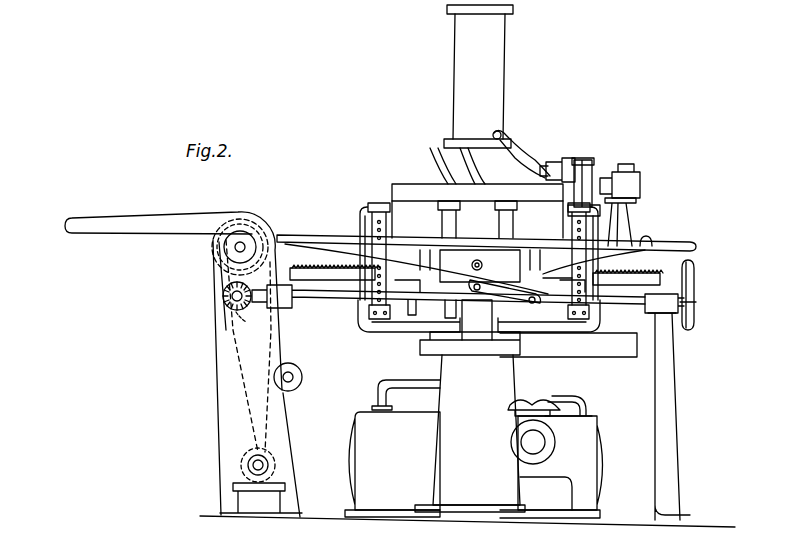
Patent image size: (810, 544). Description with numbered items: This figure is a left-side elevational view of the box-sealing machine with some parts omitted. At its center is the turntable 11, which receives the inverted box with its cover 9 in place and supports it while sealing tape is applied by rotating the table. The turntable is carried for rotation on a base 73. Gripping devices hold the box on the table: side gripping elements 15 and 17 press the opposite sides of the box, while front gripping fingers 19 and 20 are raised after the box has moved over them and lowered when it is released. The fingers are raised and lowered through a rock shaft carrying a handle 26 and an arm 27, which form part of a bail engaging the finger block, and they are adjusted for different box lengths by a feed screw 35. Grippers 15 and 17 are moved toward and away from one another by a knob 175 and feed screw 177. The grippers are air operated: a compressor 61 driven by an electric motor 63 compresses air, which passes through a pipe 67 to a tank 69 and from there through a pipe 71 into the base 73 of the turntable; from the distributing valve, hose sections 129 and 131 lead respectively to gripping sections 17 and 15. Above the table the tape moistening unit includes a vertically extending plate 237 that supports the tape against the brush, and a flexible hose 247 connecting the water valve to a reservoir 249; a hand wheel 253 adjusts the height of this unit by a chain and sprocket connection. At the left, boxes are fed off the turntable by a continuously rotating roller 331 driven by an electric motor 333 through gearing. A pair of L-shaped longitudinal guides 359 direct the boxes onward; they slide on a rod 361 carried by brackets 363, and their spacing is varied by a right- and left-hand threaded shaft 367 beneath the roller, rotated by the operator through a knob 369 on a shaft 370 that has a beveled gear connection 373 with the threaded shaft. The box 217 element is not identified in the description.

The cover 9 is at (477, 193).
The turntable 11 is at (347, 229).
The side gripping element 15 is at (588, 205).
The side gripping element 17 is at (378, 205).
The front gripping finger 19 is at (448, 201).
The front gripping finger 20 is at (505, 201).
The handle 26 is at (549, 302).
The arm 27 is at (492, 283).
The feed screw 35 is at (471, 264).
The compressor 61 is at (555, 398).
The electric motor 63 is at (540, 442).
The pipe 67 is at (580, 400).
The tank 69 is at (392, 464).
The pipe 71 is at (378, 398).
The base 73 is at (470, 433).
The hose section 129 is at (400, 330).
The hose section 131 is at (540, 336).
The knob 175 is at (695, 272).
The feed screw 177 is at (606, 286).
The box 217 is at (642, 187).
The vertically extending plate 237 is at (597, 168).
The flexible hose 247 is at (522, 158).
The reservoir 249 is at (467, 50).
The hand wheel 253 is at (630, 248).
The roller 331 is at (244, 235).
The electric motor 333 is at (270, 446).
The longitudinal guide 359 is at (163, 223).
The rod 361 is at (297, 372).
The bracket 363 is at (233, 480).
The shaft 367 is at (223, 296).
The knob 369 is at (692, 305).
The shaft 370 is at (326, 298).
The beveled gear connection 373 is at (238, 323).